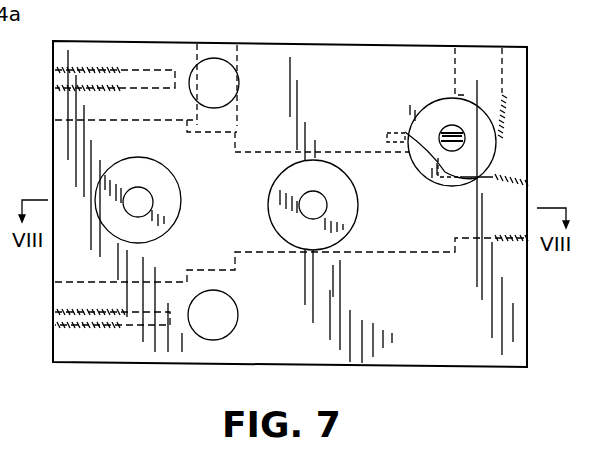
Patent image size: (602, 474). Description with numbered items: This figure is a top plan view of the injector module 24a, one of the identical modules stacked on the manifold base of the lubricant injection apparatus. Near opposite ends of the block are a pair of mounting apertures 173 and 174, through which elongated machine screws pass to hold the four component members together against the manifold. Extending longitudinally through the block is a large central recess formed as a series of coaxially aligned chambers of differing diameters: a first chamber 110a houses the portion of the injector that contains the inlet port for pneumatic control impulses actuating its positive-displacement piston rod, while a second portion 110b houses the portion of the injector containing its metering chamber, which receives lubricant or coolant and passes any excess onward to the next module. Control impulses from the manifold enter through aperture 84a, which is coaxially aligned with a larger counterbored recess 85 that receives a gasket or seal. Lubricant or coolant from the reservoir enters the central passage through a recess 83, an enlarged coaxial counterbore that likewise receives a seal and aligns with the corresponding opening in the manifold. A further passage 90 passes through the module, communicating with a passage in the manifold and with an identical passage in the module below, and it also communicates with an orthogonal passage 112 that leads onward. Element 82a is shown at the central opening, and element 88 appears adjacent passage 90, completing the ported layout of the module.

The injector module 24a is at (540, 67).
The mounting aperture 173 is at (232, 73).
The mounting aperture 174 is at (220, 331).
The first chamber of central recess 110a is at (66, 184).
The portion of injector recess 110b is at (393, 248).
The aperture 84a is at (147, 200).
The counterbored recess 85 is at (172, 208).
The recess 83 is at (334, 186).
The bore 82a is at (318, 207).
The passage 90 is at (437, 143).
The orthogonal passage 112 is at (458, 126).
The port 88 is at (480, 184).